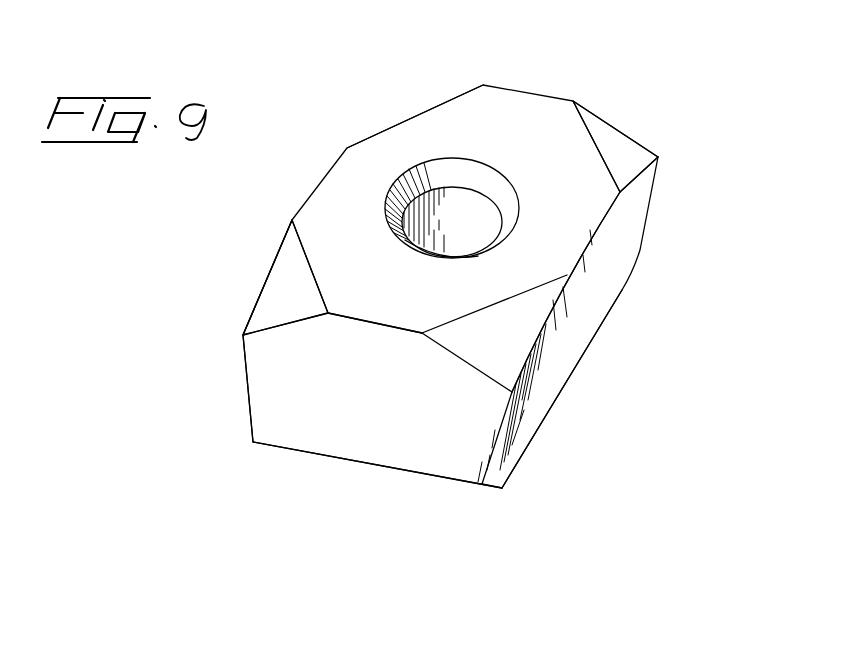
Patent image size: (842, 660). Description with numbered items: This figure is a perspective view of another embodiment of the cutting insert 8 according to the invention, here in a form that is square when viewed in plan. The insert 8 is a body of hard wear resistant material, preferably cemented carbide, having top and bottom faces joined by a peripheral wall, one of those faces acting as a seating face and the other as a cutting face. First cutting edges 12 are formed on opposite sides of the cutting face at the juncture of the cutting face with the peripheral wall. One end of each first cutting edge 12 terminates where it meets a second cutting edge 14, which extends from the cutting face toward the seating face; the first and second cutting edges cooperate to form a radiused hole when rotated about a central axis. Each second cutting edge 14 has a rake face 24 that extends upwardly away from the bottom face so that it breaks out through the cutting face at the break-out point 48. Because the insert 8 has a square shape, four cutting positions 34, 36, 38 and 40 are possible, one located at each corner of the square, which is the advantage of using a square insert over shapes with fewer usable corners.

The cutting insert 8 is at (514, 117).
The first cutting edges 12 is at (380, 328).
The second cutting edge 14 is at (288, 330).
The rake face 24 is at (290, 278).
The cutting position 34 is at (218, 313).
The cutting position 36 is at (590, 360).
The cutting position 38 is at (637, 113).
The cutting position 40 is at (385, 110).
The break-out point 48 is at (293, 222).